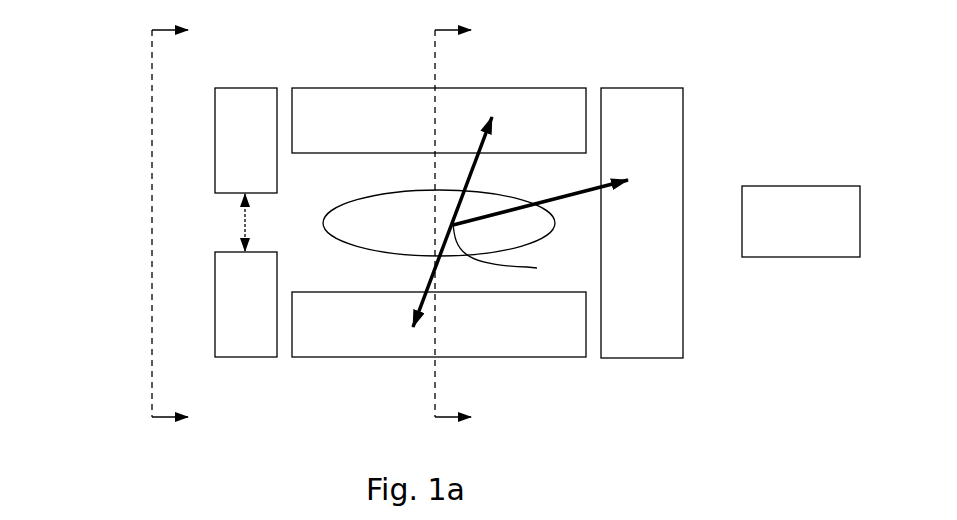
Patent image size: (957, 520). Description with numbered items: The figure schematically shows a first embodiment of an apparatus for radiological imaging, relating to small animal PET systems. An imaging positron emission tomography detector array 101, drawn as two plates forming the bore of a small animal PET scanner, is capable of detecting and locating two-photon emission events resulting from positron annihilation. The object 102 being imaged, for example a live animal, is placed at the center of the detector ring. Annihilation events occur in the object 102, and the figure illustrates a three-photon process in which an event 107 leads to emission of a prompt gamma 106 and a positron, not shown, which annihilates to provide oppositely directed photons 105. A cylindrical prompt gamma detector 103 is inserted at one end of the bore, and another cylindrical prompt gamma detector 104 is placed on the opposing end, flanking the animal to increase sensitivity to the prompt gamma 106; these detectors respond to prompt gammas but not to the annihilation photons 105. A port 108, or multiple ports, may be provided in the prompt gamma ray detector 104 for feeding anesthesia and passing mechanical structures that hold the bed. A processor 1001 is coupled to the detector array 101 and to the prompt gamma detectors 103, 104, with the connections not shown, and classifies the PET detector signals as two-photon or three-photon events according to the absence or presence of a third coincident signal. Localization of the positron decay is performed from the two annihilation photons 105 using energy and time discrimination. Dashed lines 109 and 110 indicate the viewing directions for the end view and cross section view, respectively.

The imaging PET detector array 101 is at (379, 123).
The object 102 is at (406, 237).
The prompt gamma detector 103 is at (664, 233).
The prompt gamma detector 104 is at (268, 158).
The oppositely directed photons 105 is at (490, 127).
The prompt gamma 106 is at (612, 178).
The event 107 is at (518, 253).
The port 108 is at (245, 222).
The line 109 is at (152, 32).
The line 110 is at (435, 34).
The processor 1001 is at (832, 236).